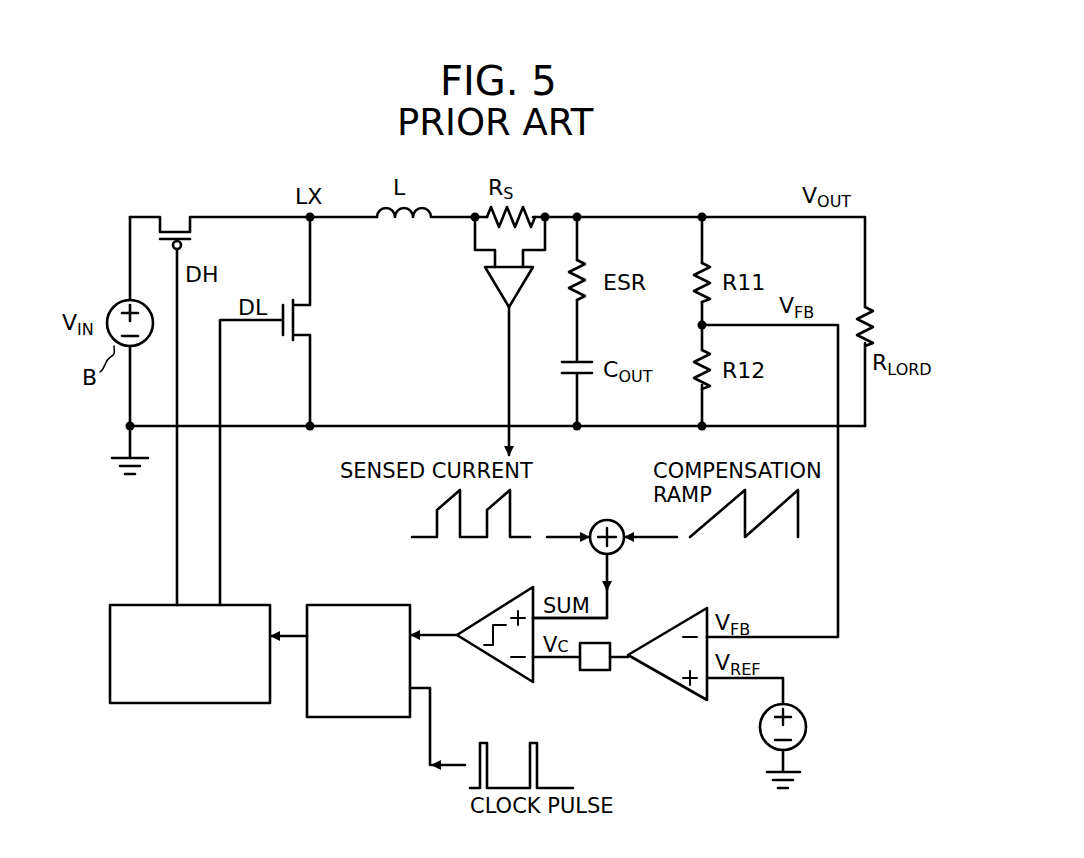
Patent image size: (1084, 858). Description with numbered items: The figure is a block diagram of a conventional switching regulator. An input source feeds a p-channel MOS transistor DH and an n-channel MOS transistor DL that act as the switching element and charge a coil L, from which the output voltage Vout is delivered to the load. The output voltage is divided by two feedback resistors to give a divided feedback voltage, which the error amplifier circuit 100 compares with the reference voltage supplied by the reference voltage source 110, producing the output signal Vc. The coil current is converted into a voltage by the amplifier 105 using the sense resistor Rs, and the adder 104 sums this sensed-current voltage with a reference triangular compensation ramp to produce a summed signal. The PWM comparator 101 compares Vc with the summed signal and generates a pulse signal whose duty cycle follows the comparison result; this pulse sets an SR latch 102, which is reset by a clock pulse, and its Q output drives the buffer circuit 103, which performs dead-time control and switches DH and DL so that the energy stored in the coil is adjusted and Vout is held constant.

The error amplifier circuit 100 is at (672, 686).
The PWM comparator 101 is at (490, 665).
The SR latch 102 is at (332, 603).
The buffer circuit 103 is at (125, 603).
The adder 104 is at (605, 520).
The amplifier 105 is at (494, 286).
The reference voltage source 110 is at (806, 722).